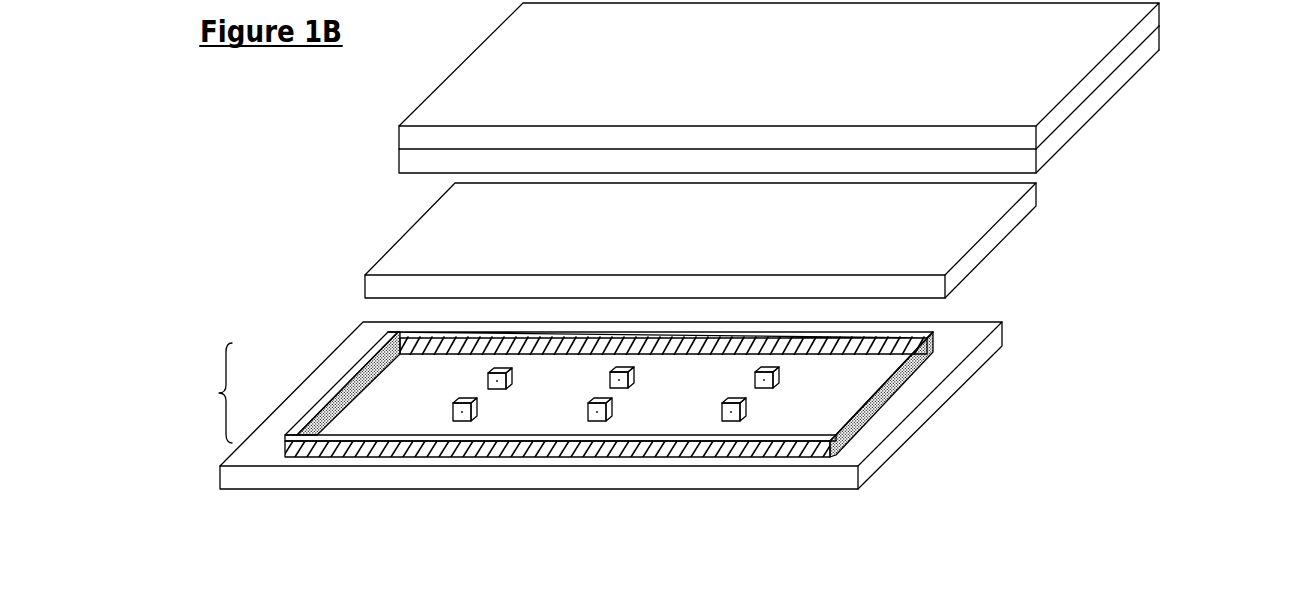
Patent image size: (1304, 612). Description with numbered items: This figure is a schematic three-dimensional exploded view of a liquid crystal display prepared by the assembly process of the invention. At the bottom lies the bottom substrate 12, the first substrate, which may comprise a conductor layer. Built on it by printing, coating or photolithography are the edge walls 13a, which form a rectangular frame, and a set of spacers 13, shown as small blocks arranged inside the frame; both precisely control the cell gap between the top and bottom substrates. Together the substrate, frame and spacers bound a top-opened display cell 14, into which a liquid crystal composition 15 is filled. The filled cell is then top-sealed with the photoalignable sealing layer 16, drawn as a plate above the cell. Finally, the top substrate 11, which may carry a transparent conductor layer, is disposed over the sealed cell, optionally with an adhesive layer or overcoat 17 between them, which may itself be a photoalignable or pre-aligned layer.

The top substrate 11 is at (1160, 15).
The adhesive layer or overcoat 17 is at (1116, 92).
The photoalignable sealing layer 16 is at (1025, 219).
The bottom substrate 12 is at (912, 423).
The edge walls 13a is at (930, 357).
The spacers 13 is at (773, 378).
The display cell 14 is at (199, 393).
The liquid crystal composition 15 is at (430, 367).